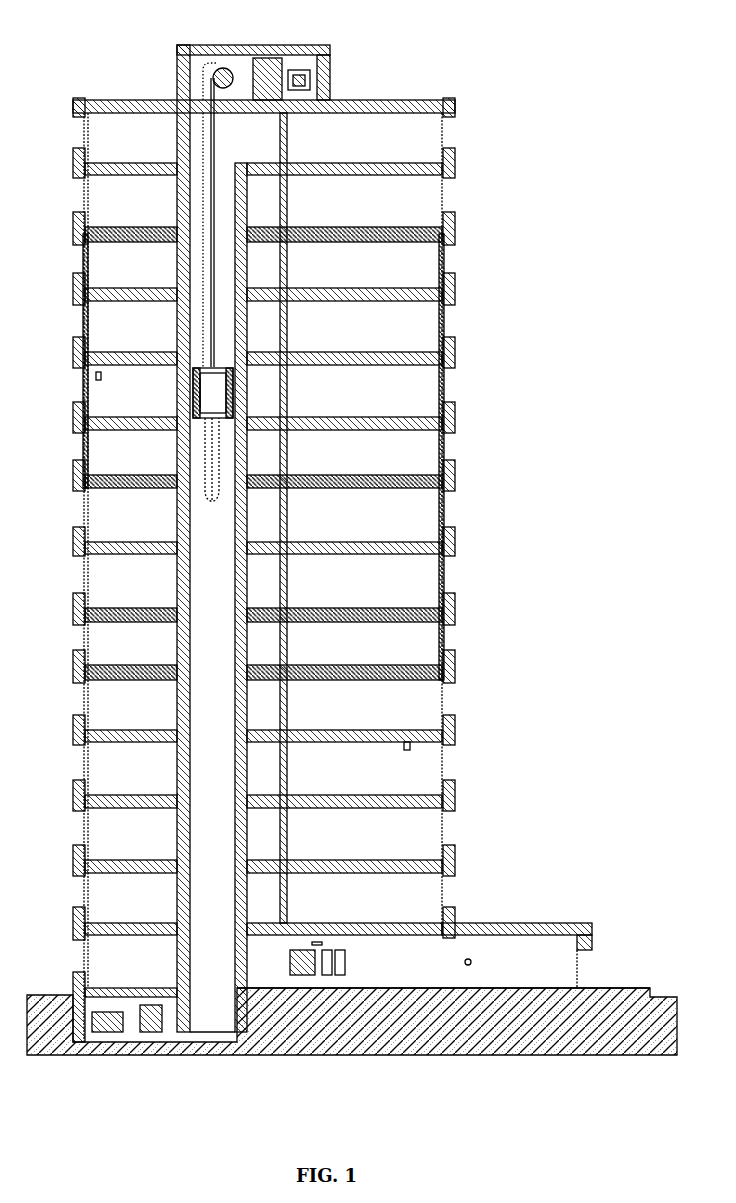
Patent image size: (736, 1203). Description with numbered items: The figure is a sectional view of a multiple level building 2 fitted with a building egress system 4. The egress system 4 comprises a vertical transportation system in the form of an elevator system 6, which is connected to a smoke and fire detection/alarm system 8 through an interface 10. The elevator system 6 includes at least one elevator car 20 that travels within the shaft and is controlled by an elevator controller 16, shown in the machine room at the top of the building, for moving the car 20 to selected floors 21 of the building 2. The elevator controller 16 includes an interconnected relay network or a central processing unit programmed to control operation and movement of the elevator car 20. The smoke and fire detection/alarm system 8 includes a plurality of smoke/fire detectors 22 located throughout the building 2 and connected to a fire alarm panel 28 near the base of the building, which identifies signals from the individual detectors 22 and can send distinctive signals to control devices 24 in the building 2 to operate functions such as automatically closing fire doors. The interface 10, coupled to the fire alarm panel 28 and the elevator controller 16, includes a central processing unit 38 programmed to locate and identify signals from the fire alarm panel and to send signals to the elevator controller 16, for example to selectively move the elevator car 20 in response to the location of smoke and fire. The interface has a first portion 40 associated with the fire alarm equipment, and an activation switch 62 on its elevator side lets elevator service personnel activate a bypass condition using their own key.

The multiple level building 2 is at (440, 92).
The building egress system 4 is at (188, 428).
The elevator system 6 is at (200, 386).
The smoke and fire detection/alarm system 8 is at (98, 384).
The interface 10 is at (342, 980).
The elevator controller 16 is at (264, 56).
The elevator car 20 is at (193, 370).
The floors 21 is at (440, 295).
The smoke/fire detectors 22 is at (400, 492).
The control devices 24 is at (468, 968).
The fire alarm panel 28 is at (305, 922).
The central processing unit 38 is at (326, 980).
The first portion 40 is at (322, 74).
The activation switch 62 is at (199, 398).